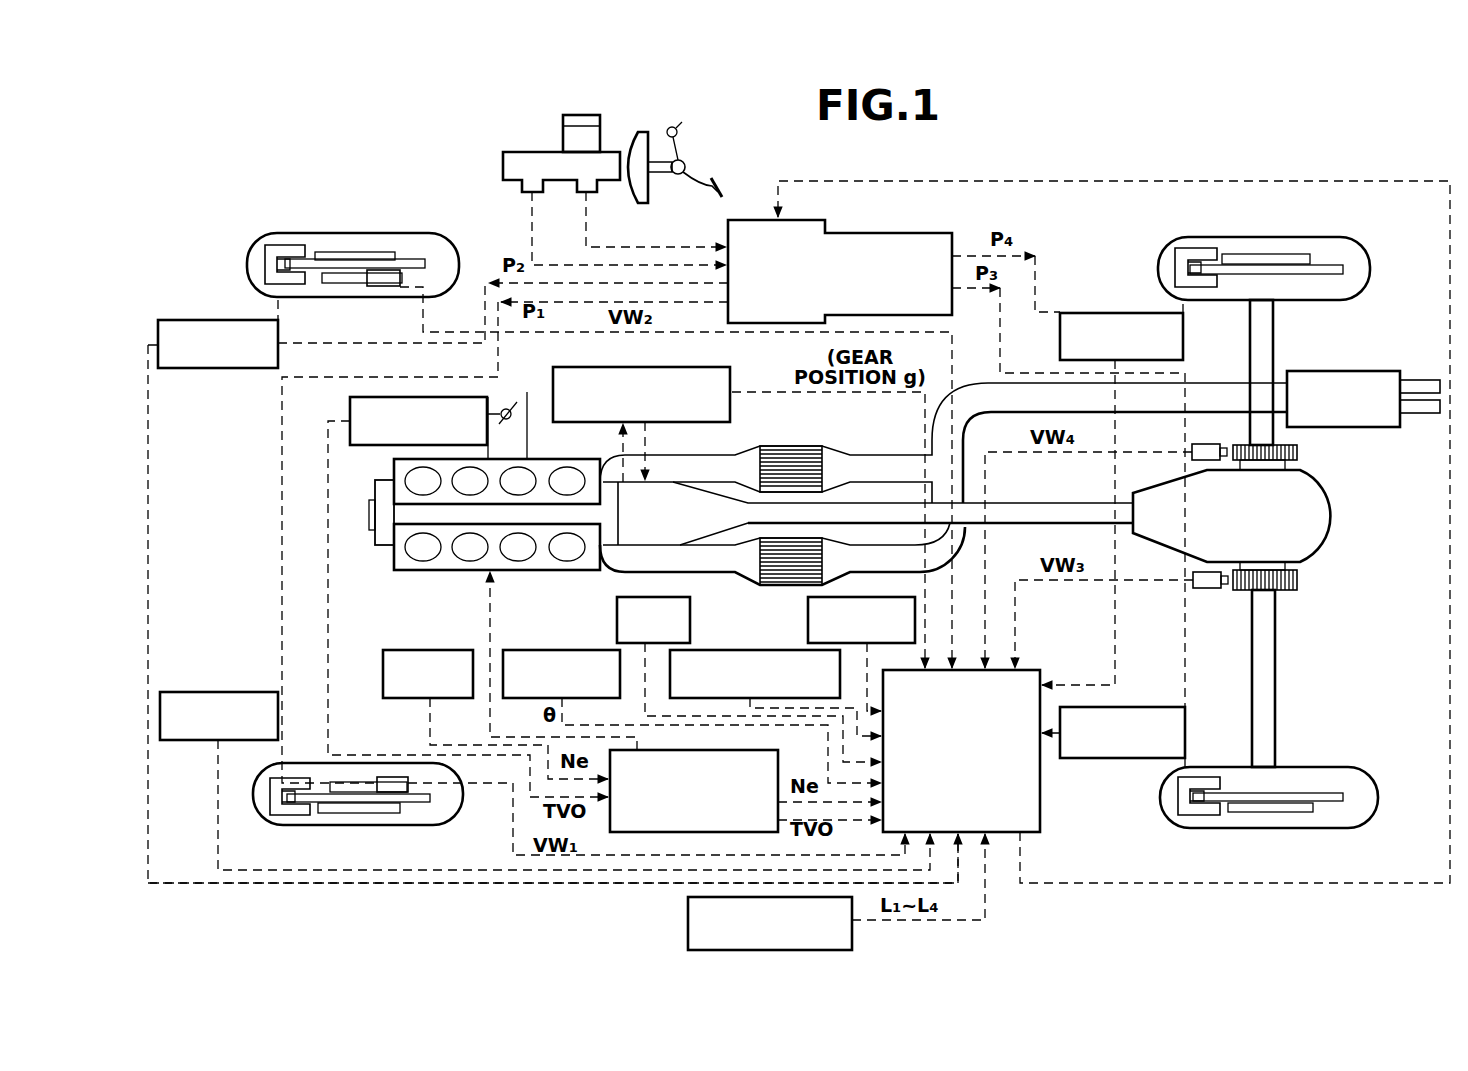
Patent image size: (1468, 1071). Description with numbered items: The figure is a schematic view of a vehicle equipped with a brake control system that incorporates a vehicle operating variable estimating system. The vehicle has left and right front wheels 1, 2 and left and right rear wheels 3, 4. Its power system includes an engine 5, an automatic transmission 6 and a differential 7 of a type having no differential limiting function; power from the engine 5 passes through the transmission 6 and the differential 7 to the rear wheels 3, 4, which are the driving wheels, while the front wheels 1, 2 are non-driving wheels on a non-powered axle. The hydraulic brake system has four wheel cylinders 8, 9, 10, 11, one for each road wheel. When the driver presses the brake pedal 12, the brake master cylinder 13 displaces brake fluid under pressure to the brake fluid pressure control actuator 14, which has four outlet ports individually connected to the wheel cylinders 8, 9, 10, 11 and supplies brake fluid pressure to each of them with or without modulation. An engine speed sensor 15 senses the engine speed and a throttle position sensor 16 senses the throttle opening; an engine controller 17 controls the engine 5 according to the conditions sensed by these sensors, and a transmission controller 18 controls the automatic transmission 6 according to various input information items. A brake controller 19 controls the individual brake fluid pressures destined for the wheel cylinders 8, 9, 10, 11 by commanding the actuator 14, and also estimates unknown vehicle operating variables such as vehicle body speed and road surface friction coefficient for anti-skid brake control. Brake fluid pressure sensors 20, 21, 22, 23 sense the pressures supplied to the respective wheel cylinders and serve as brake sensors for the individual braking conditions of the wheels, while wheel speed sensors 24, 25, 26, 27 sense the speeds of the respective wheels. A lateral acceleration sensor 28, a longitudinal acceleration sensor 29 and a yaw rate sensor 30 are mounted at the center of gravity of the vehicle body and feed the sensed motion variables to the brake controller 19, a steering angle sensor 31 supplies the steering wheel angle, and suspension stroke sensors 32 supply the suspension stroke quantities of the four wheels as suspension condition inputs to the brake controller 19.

The left front wheel 1 is at (358, 777).
The right front wheel 2 is at (353, 259).
The left rear wheel 3 is at (1269, 772).
The right rear wheel 4 is at (1272, 249).
The engine 5 is at (375, 490).
The automatic transmission 6 is at (672, 529).
The differential 7 is at (1266, 533).
The wheel cylinder 8 is at (297, 778).
The wheel cylinder 9 is at (289, 245).
The wheel cylinder 10 is at (1210, 777).
The wheel cylinder 11 is at (1197, 250).
The brake pedal 12 is at (720, 186).
The brake master cylinder 13 is at (503, 165).
The brake fluid pressure control actuator 14 is at (920, 233).
The engine speed sensor 15 is at (430, 650).
The throttle position sensor 16 is at (350, 405).
The engine controller 17 is at (778, 767).
The transmission controller 18 is at (730, 416).
The brake controller 19 is at (1037, 670).
The brake fluid pressure sensor 20 is at (220, 692).
The brake fluid pressure sensor 21 is at (207, 320).
The brake fluid pressure sensor 22 is at (1105, 758).
The brake fluid pressure sensor 23 is at (1183, 330).
The wheel speed sensor 24 is at (383, 777).
The wheel speed sensor 25 is at (385, 287).
The wheel speed sensor 26 is at (1207, 588).
The wheel speed sensor 27 is at (1192, 450).
The lateral acceleration sensor 28 is at (808, 614).
The longitudinal acceleration sensor 29 is at (716, 650).
The yaw rate sensor 30 is at (690, 620).
The steering angle sensor 31 is at (564, 650).
The suspension stroke sensor 32 is at (688, 920).